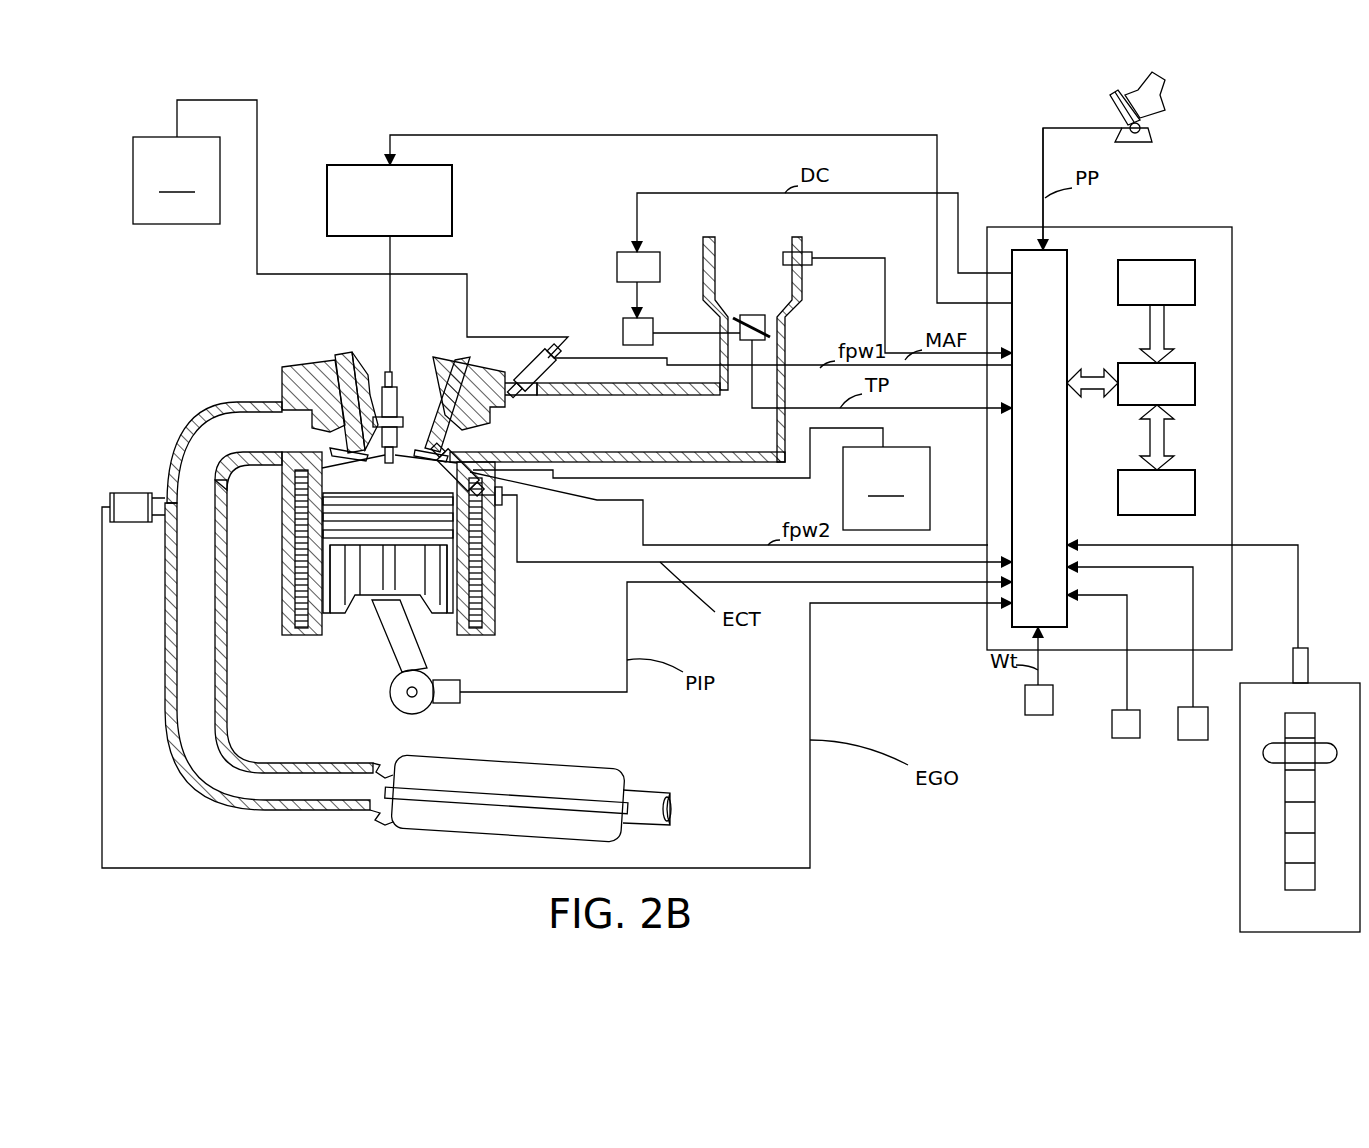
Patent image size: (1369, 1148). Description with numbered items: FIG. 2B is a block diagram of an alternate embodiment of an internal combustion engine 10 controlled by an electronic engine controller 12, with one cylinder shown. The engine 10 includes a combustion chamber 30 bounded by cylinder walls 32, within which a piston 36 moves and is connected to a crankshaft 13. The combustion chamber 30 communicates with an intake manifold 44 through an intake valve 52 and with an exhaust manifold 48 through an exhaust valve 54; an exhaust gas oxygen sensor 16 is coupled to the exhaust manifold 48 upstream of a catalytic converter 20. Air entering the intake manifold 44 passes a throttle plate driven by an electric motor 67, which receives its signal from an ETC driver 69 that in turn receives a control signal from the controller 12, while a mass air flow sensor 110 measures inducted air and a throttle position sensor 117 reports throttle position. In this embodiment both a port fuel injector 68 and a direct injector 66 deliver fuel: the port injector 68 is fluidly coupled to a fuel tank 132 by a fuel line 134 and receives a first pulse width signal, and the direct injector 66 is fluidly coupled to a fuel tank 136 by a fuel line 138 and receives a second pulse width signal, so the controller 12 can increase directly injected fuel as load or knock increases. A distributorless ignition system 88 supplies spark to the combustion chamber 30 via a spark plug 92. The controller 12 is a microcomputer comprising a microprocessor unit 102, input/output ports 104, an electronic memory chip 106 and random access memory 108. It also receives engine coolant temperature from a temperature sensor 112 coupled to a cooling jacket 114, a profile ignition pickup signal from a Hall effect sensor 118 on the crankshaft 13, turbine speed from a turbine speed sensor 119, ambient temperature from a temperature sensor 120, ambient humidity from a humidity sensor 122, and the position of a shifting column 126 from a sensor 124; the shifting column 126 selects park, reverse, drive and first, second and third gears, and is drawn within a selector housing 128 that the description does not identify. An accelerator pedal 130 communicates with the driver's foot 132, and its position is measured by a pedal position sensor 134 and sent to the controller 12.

The internal combustion engine 10 is at (208, 318).
The electronic engine controller 12 is at (1220, 227).
The crankshaft 13 is at (398, 703).
The exhaust gas oxygen sensor 16 is at (108, 495).
The catalytic converter 20 is at (578, 767).
The combustion chamber 30 is at (385, 472).
The cylinder walls 32 is at (328, 617).
The piston 36 is at (373, 607).
The intake manifold 44 is at (694, 436).
The exhaust manifold 48 is at (258, 444).
The intake valve 52 is at (440, 438).
The exhaust valve 54 is at (345, 448).
The direct injector 66 is at (775, 333).
The electric motor 67 is at (623, 330).
The port fuel injector 68 is at (545, 362).
The ETC driver 69 is at (617, 272).
The distributorless ignition system 88 is at (350, 165).
The spark plug 92 is at (395, 372).
The microprocessor unit 102 is at (1195, 378).
The input/output ports 104 is at (1067, 262).
The electronic memory chip 106 is at (1195, 280).
The random access memory 108 is at (1195, 490).
The mass air flow sensor 110 is at (805, 255).
The temperature sensor 112 is at (502, 505).
The cooling jacket 114 is at (475, 580).
The throttle position sensor 117 is at (755, 315).
The Hall effect sensor 118 is at (450, 705).
The turbine speed sensor 119 is at (1025, 700).
The temperature sensor 120 is at (1122, 738).
The humidity sensor 122 is at (1192, 740).
The sensor 124 is at (1308, 665).
The shifting column 126 is at (1263, 755).
The gear shift selector 128 is at (1240, 848).
The accelerator pedal 130 is at (1112, 103).
The fuel tank 132 is at (1168, 85).
The fuel line 134 is at (467, 320).
The fuel tank 136 is at (886, 488).
The fuel line 138 is at (690, 478).